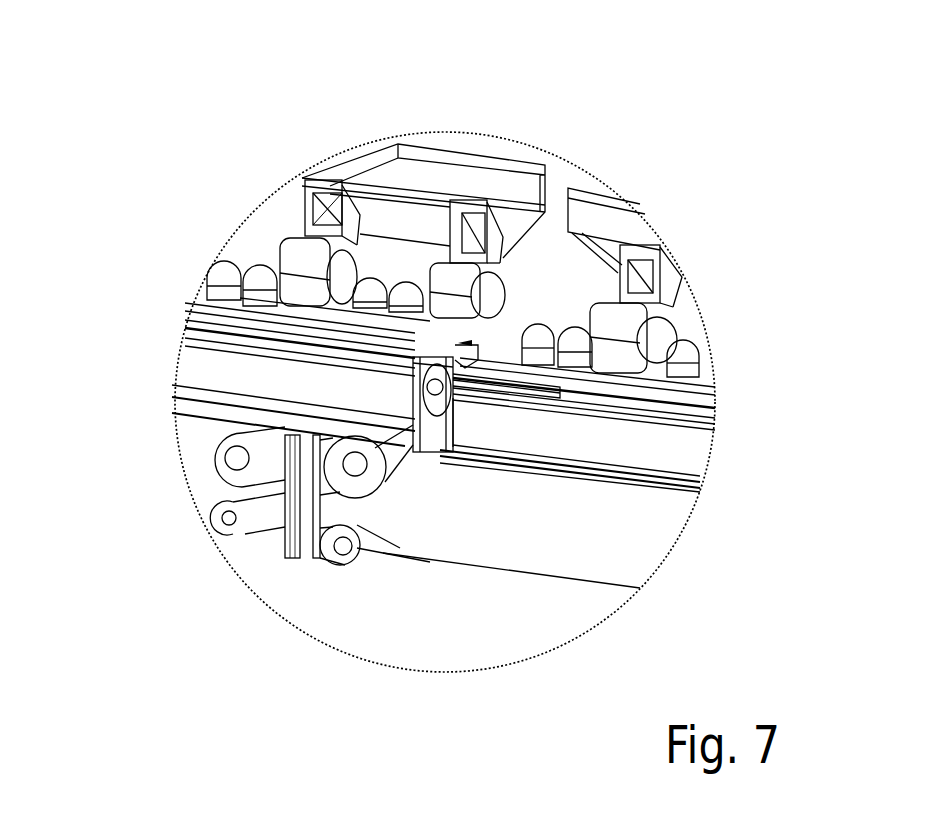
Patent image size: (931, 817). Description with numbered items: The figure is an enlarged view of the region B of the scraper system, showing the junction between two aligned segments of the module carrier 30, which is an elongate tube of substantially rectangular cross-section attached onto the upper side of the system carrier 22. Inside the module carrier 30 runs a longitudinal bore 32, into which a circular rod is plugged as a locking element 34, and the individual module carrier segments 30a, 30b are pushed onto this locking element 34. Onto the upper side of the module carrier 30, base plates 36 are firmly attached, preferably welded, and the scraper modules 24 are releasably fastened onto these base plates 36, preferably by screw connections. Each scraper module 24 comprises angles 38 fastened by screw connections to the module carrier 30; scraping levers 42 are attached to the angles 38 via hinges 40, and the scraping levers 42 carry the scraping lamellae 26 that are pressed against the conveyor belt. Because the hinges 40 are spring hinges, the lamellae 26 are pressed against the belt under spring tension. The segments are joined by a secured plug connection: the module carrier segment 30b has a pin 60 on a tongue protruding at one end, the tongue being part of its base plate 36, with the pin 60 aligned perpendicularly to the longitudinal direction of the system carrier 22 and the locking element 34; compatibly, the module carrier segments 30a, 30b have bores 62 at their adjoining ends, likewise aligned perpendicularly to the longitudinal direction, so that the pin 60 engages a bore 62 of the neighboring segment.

The system carrier 22 is at (551, 558).
The scraper module 24 is at (298, 233).
The scraping lamella 26 is at (478, 163).
The module carrier 30 is at (735, 462).
The module carrier segment 30a is at (667, 460).
The module carrier segment 30b is at (373, 397).
The longitudinal bore 32 is at (423, 373).
The locking element 34 is at (440, 390).
The base plate 36 is at (287, 330).
The angle 38 is at (278, 262).
The hinge 40 is at (313, 268).
The scraping lever 42 is at (323, 225).
The pin 60 is at (470, 360).
The bore 62 is at (487, 380).
The region B is at (563, 165).